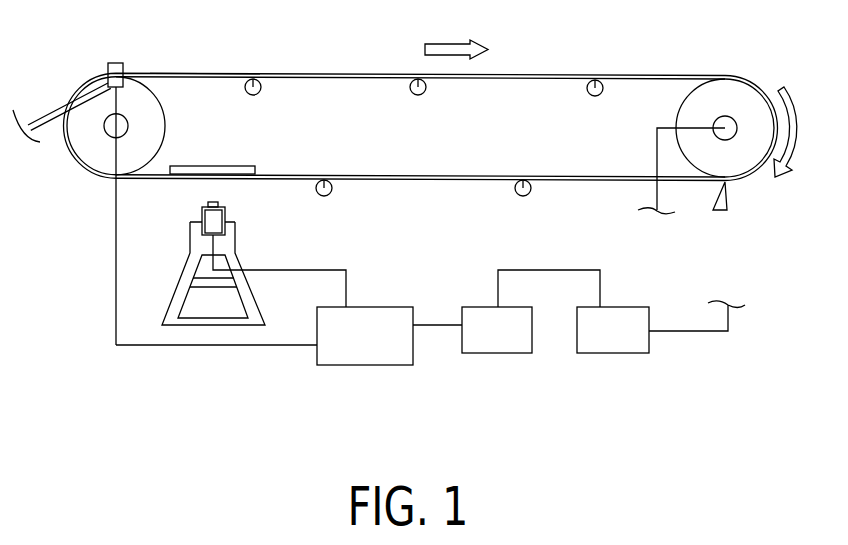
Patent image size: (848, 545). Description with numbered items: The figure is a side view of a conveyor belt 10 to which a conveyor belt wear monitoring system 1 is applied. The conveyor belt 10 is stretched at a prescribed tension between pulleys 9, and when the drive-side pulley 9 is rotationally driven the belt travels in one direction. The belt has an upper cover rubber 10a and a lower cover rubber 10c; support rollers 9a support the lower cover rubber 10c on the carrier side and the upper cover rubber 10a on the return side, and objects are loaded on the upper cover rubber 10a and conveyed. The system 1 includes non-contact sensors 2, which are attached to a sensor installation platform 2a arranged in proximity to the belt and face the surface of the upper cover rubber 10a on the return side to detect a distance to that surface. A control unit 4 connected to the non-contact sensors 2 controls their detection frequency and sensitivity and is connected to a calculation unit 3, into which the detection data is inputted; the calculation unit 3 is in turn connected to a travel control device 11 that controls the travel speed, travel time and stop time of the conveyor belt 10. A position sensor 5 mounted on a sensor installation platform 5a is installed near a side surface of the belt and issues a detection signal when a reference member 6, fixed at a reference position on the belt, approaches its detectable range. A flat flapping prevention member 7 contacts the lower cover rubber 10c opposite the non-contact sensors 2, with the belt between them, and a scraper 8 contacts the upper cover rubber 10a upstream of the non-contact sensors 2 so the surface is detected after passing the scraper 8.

The conveyor belt wear monitoring system 1 is at (190, 382).
The non-contact sensor 2 is at (210, 220).
The sensor installation platform 2a is at (185, 283).
The calculation unit 3 is at (497, 342).
The control unit 4 is at (367, 317).
The position sensor 5 is at (112, 63).
The sensor installation platform 5a is at (55, 110).
The reference member 6 is at (203, 73).
The flapping prevention member 7 is at (213, 167).
The scraper 8 is at (730, 203).
The pulley 9 is at (98, 153).
The support roller 9a is at (257, 93).
The conveyor belt 10 is at (421, 97).
The upper cover rubber 10a is at (368, 72).
The lower cover rubber 10c is at (478, 173).
The travel control device 11 is at (613, 342).